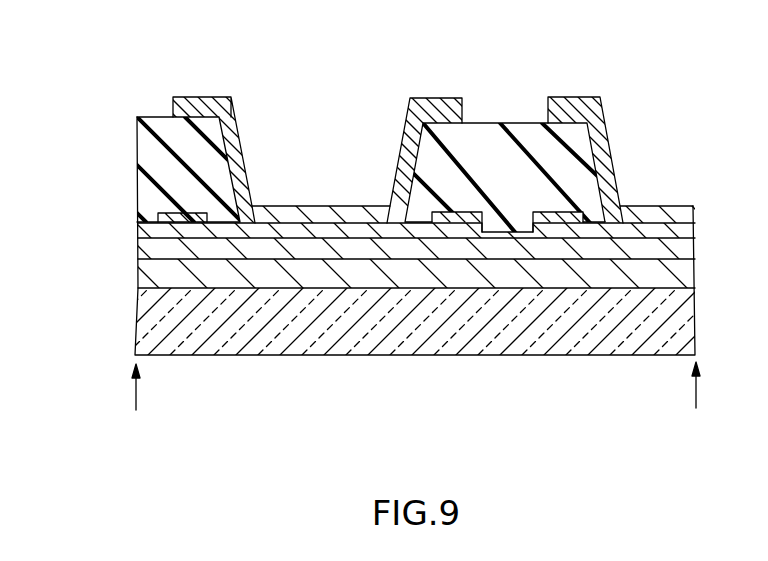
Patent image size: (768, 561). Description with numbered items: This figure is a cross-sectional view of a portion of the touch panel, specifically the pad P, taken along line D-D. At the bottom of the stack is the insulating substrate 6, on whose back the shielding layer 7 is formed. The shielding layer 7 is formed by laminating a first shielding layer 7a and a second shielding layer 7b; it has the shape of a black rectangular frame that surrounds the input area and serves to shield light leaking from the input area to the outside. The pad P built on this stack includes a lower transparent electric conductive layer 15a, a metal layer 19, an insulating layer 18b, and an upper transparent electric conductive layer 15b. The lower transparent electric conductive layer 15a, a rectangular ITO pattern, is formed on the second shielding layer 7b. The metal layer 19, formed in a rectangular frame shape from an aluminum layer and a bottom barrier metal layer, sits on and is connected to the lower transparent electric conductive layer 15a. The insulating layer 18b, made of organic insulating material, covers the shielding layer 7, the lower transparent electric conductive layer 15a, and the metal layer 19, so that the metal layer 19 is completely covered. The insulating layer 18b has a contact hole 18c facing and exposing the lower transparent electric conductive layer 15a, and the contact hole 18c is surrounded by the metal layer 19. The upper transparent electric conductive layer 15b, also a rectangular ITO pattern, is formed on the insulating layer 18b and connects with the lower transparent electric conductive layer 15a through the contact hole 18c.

The insulating substrate 6 is at (323, 355).
The shielding layer 7 is at (378, 259).
The first shielding layer 7a is at (140, 263).
The second shielding layer 7b is at (140, 239).
The lower transparent electric conductive layer 15a is at (316, 226).
The upper transparent electric conductive layer 15b is at (375, 206).
The pad P is at (424, 128).
The insulating layer 18b is at (152, 117).
The contact hole 18c is at (228, 128).
The metal layer 19 is at (440, 212).
The line D- D is at (417, 402).